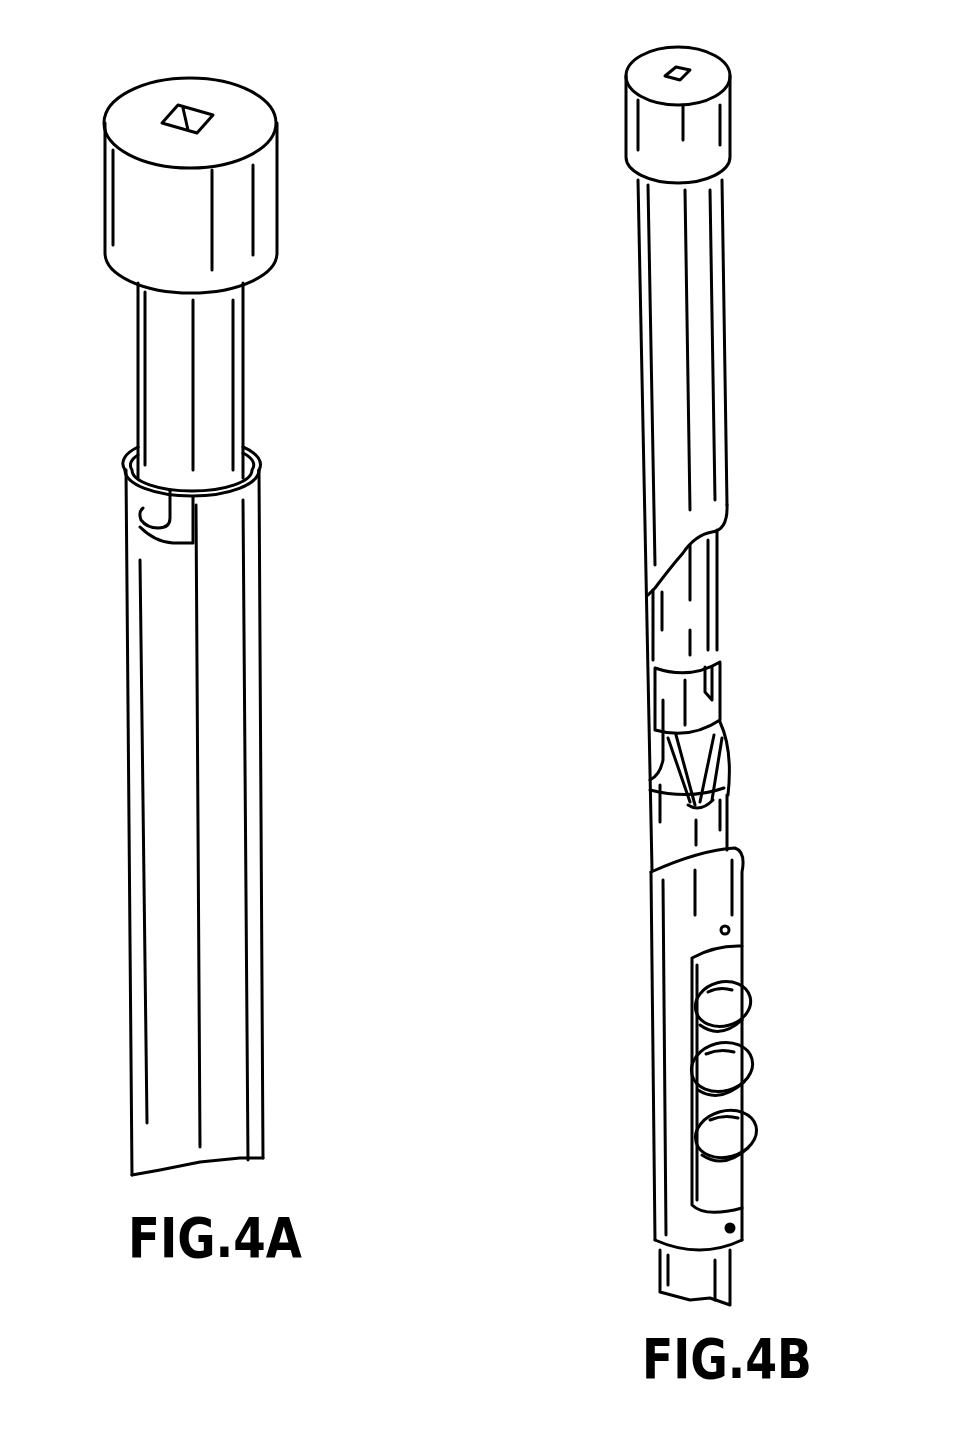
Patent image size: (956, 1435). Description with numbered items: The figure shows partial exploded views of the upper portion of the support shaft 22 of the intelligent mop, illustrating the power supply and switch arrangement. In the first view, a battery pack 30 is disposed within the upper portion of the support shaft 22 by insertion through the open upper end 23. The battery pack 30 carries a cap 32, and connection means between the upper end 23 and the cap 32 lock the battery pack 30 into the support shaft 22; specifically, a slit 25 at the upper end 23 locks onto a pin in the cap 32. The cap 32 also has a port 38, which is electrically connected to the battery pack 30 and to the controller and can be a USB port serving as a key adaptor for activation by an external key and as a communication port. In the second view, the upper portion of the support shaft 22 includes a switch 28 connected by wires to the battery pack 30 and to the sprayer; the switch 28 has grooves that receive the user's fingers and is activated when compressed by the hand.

In FIG. 4A, the support shaft 22 is at (260, 797).
In FIG. 4B, the support shaft 22 is at (727, 283).
In FIG. 4A, the upper end 23 is at (259, 488).
In FIG. 4A, the slit 25 is at (127, 527).
In FIG. 4B, the switch 28 is at (755, 985).
In FIG. 4A, the battery pack 30 is at (243, 341).
In FIG. 4B, the battery pack 30 is at (722, 572).
In FIG. 4A, the cap 32 is at (278, 170).
In FIG. 4B, the cap 32 is at (627, 120).
In FIG. 4A, the port 38 is at (196, 117).
In FIG. 4B, the port 38 is at (668, 75).